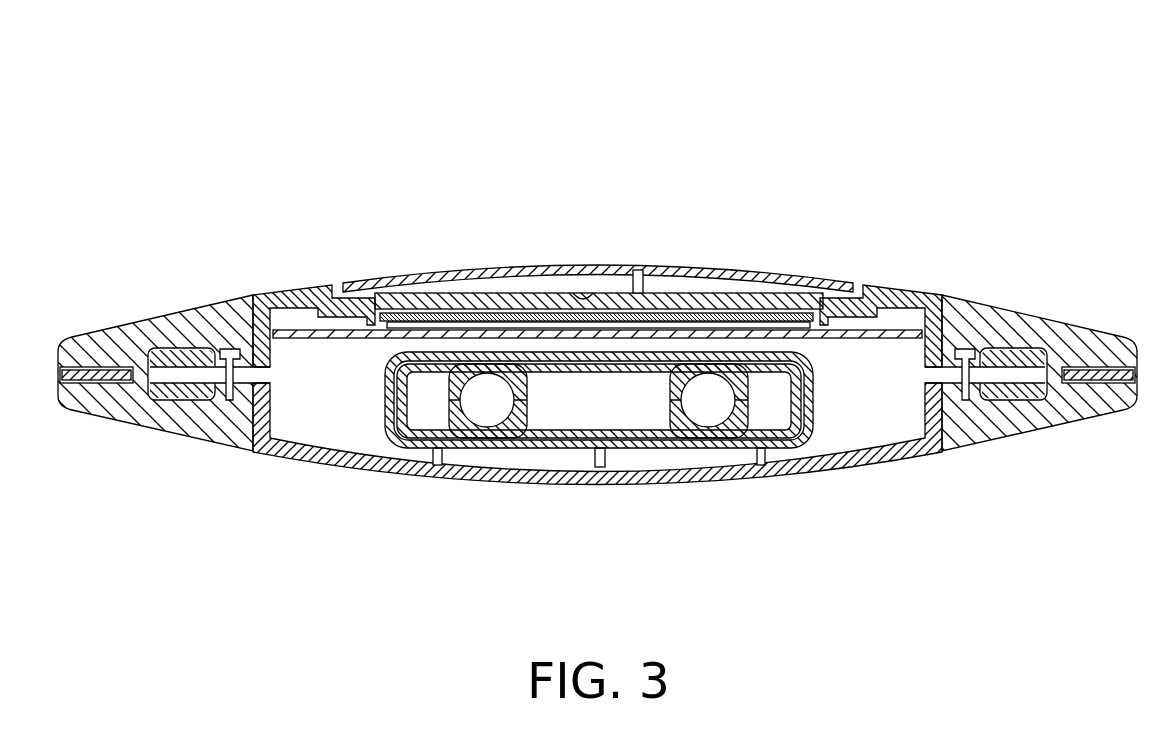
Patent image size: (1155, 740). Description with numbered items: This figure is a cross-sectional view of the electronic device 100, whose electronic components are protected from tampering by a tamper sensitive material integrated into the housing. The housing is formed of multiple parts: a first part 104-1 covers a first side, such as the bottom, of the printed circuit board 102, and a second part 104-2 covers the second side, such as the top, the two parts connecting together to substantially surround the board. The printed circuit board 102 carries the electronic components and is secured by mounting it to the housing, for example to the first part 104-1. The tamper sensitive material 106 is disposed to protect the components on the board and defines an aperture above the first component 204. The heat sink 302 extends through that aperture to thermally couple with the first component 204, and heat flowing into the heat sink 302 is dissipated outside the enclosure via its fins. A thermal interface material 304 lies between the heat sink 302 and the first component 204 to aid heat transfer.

The electronic device 100 is at (1010, 123).
The printed circuit board 102 is at (460, 335).
The first part of the housing 104-1 is at (895, 462).
The second part of the housing 104-2 is at (905, 288).
The tamper sensitive material 106 is at (413, 317).
The first component 204 is at (592, 315).
The heat sink 302 is at (673, 305).
The thermal interface material 304 is at (610, 313).